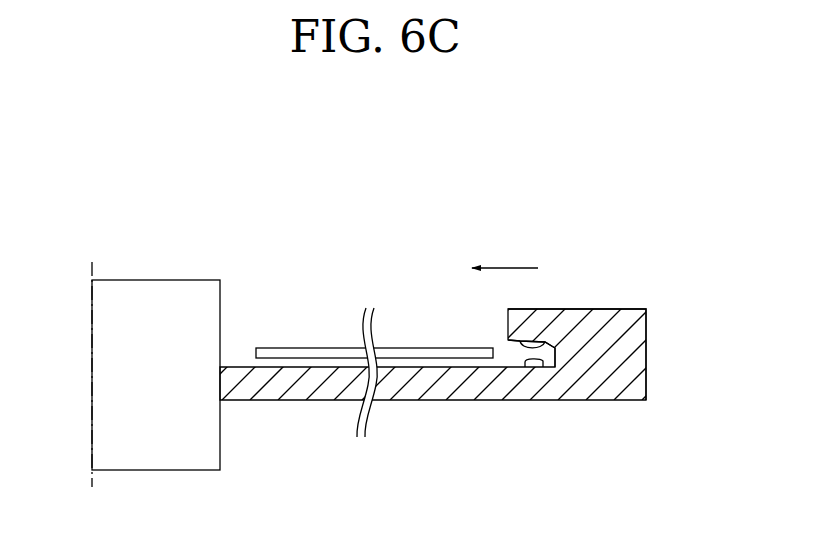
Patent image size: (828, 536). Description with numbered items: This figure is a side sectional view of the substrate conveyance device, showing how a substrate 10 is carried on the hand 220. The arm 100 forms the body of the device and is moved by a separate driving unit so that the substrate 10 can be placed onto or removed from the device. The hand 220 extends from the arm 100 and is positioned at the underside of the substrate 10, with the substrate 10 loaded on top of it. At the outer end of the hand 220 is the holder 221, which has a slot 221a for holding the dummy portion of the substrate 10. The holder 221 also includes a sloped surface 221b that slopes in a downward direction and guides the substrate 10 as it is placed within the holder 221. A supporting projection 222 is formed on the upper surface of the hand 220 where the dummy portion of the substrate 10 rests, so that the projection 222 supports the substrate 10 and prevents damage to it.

The arm 100 is at (152, 279).
The substrate 10 is at (300, 346).
The hand 220 is at (648, 307).
The holder 221 is at (612, 372).
The slot 221a is at (520, 355).
The sloped surface 221b is at (537, 346).
The supporting projection 222 is at (546, 362).